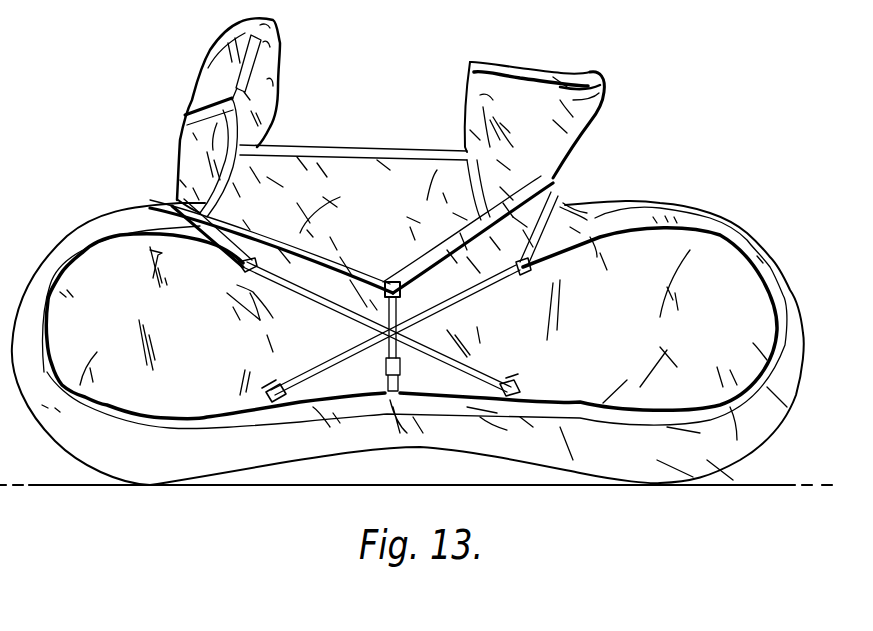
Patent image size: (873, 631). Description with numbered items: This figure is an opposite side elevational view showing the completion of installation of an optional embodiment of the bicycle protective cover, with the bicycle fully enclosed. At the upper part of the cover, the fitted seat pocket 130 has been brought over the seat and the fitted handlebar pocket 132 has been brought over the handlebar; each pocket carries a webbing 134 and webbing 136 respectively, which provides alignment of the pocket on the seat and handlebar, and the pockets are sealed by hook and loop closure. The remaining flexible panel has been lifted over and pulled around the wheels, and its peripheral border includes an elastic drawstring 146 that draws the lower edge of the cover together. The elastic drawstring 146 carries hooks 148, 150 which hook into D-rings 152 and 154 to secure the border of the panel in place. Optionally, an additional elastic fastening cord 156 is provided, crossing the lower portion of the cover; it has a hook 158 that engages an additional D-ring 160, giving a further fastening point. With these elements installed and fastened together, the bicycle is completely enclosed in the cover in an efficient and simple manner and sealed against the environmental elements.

The fitted seat pocket 130 is at (560, 60).
The fitted handlebar pocket 132 is at (208, 62).
The webbing 134 is at (604, 92).
The webbing 136 is at (273, 90).
The elastic drawstring 146 is at (336, 304).
The hook 148 is at (277, 382).
The hook 150 is at (527, 375).
The D-ring 152 is at (268, 400).
The D-ring 154 is at (527, 393).
The additional elastic fastening cord 156 is at (398, 270).
The hook 158 is at (400, 363).
The additional D-ring 160 is at (386, 373).